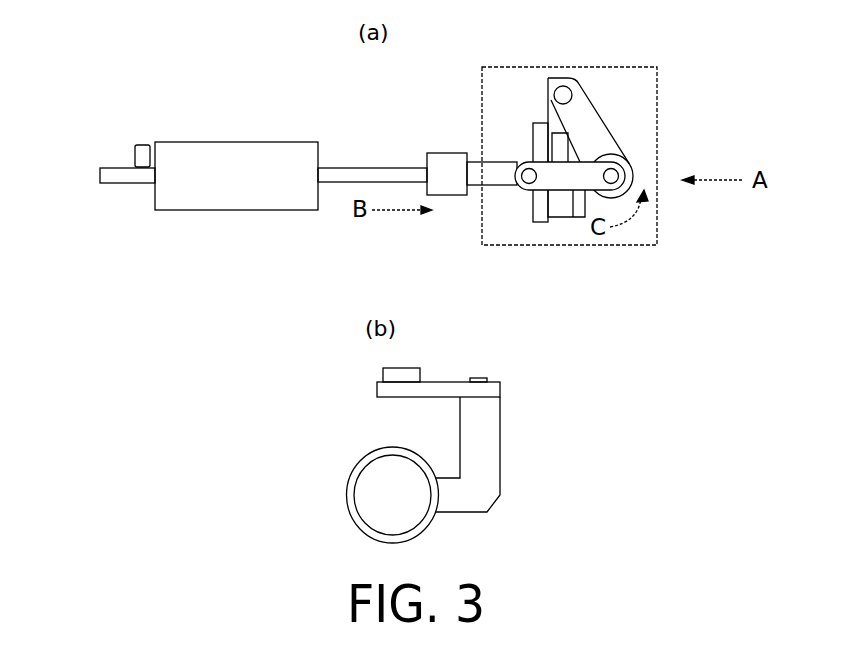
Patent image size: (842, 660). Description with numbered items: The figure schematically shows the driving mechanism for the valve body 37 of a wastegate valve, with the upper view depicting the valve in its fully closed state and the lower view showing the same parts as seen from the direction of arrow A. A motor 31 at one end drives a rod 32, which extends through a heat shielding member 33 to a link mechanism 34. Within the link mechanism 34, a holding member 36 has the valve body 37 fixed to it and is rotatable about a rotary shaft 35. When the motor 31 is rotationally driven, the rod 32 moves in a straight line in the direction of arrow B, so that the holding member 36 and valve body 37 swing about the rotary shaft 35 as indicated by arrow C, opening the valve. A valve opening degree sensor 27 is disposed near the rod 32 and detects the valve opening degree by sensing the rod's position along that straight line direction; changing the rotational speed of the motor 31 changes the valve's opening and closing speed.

The valve opening degree sensor 27 is at (135, 151).
The motor 31 is at (208, 141).
The rod 32 is at (353, 167).
The heat shielding member 33 is at (447, 153).
The link mechanism 34 is at (658, 120).
The rotary shaft 35 is at (551, 86).
The holding member 36 is at (570, 218).
The valve body 37 is at (540, 222).